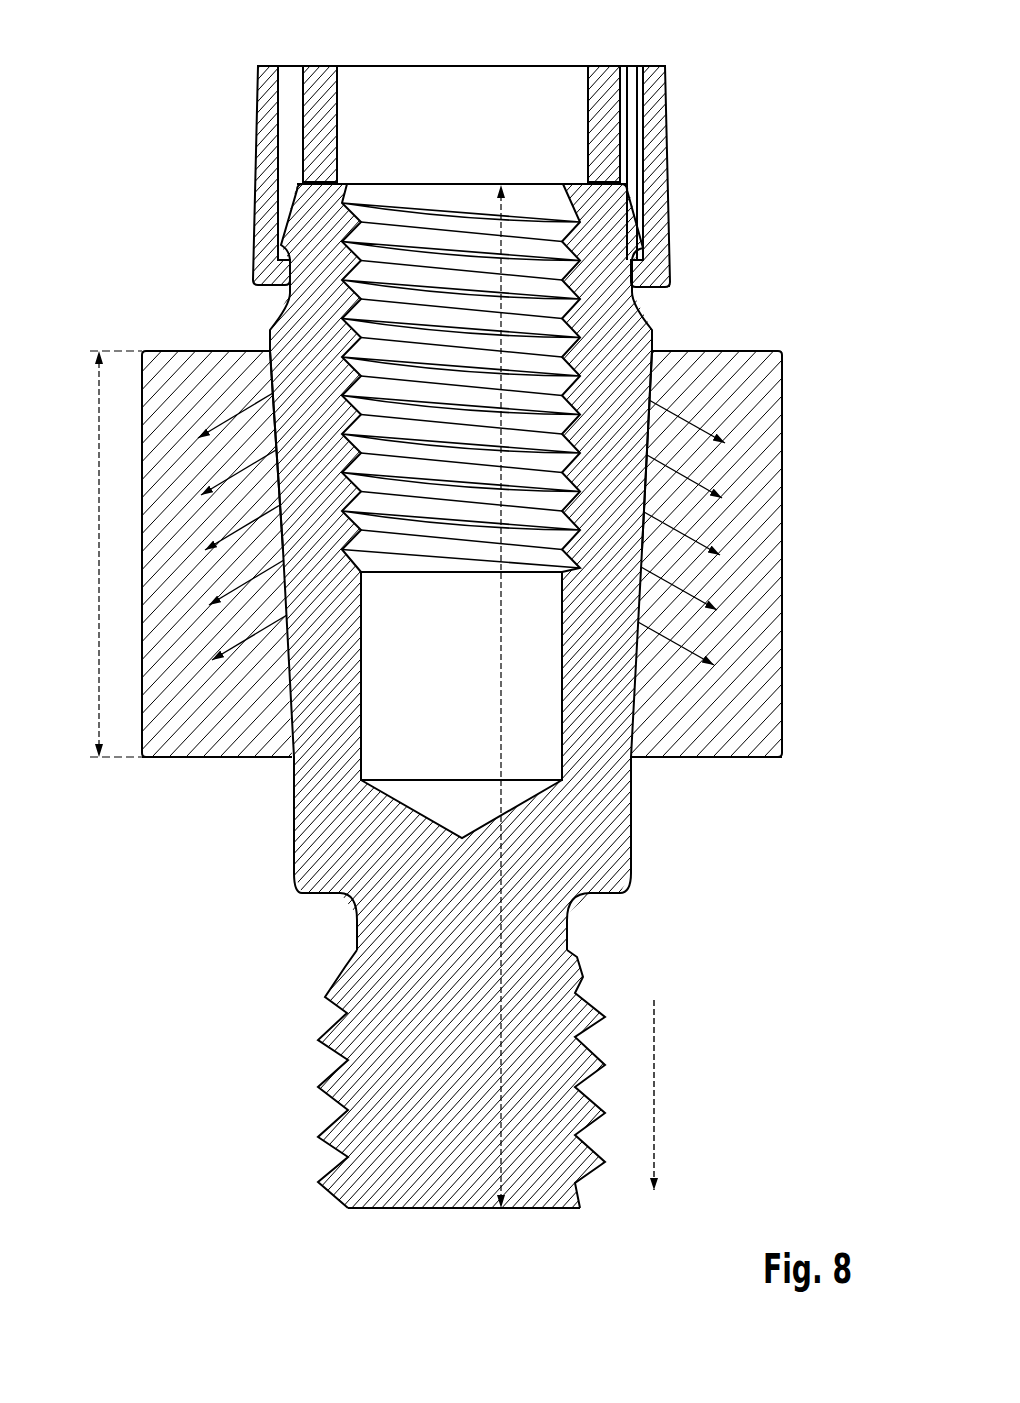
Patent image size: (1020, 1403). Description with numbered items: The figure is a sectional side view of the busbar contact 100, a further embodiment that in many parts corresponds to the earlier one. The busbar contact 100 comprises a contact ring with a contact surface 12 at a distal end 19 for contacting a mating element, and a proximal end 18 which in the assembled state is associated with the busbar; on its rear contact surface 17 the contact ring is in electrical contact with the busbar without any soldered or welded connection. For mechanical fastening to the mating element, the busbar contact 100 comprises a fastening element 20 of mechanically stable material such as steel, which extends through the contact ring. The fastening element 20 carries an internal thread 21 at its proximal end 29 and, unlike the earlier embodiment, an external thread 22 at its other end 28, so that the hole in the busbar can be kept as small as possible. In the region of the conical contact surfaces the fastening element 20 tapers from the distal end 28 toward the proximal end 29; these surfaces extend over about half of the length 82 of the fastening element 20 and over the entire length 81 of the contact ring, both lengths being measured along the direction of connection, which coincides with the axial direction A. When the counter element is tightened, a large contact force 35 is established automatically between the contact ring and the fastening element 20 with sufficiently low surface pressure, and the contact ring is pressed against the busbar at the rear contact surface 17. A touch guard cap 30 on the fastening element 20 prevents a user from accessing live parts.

The busbar contact 100 is at (183, 42).
The touch guard cap 30 is at (607, 122).
The proximal end 29 is at (617, 218).
The internal thread 21 is at (352, 262).
The fastening element 20 is at (636, 330).
The contact surface 12 is at (190, 350).
The distal end 19 is at (750, 368).
The contact force 35 is at (703, 490).
The length 81 is at (93, 568).
The proximal end 18 is at (168, 736).
The rear contact surface 17 is at (722, 762).
The length 82 is at (500, 792).
The external thread 22 is at (330, 1088).
The distal end 28 is at (423, 1138).
The axial direction A is at (655, 1080).